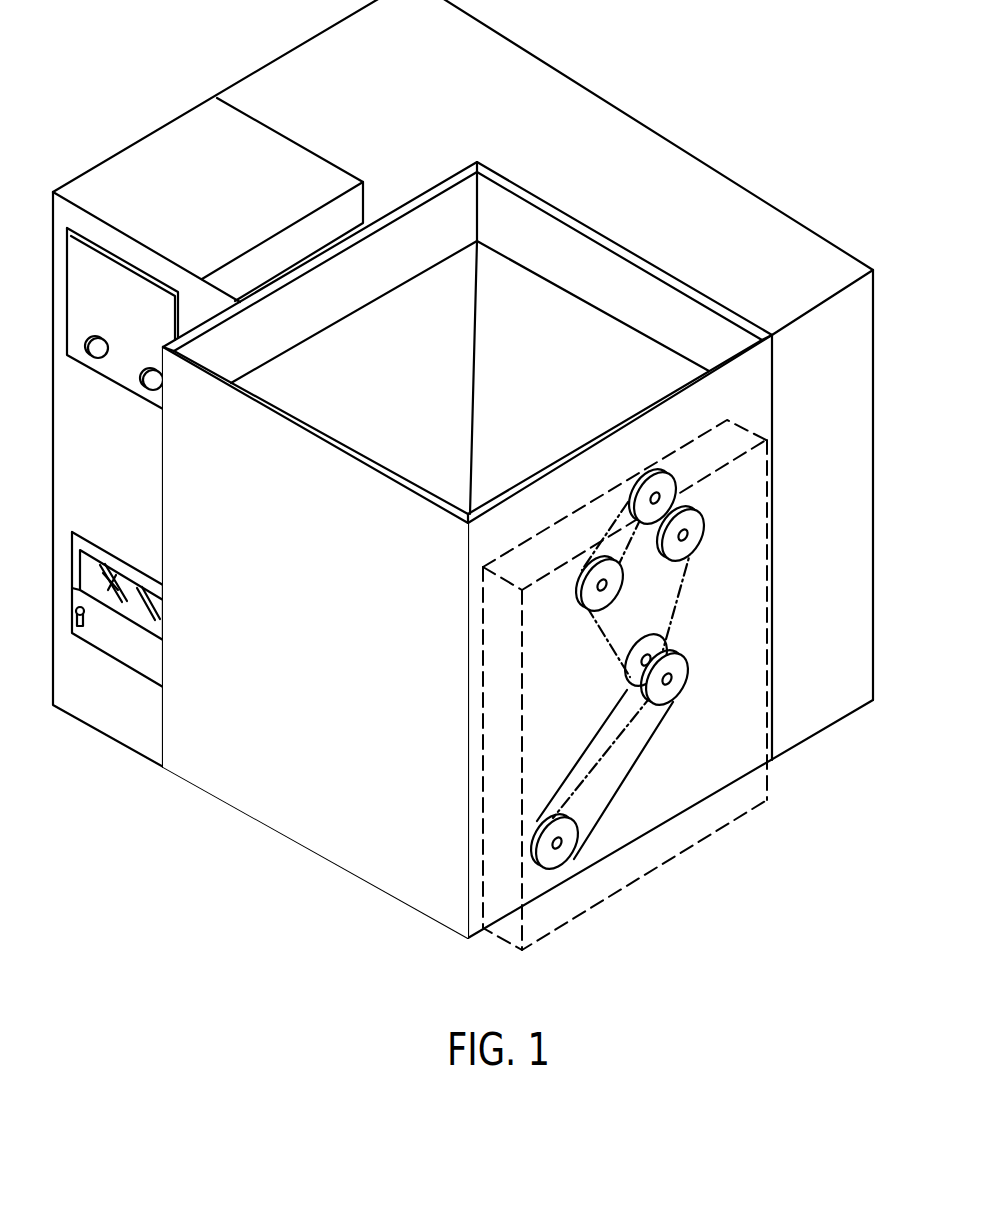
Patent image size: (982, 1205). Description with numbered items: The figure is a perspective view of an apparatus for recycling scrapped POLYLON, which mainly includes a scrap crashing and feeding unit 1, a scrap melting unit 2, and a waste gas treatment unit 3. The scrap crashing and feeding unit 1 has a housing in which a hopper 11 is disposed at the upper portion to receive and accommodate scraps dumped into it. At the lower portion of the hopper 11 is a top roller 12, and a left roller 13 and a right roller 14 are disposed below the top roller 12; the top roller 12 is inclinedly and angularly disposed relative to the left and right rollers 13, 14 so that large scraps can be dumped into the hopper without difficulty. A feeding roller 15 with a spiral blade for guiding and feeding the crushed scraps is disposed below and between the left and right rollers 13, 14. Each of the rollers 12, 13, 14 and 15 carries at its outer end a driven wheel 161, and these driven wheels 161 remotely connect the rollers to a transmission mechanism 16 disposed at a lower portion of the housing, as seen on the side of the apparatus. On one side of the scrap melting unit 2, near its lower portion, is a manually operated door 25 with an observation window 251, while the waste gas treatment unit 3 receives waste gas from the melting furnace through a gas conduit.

The scrap crashing and feeding unit 1 is at (362, 830).
The scrap melting unit 2 is at (163, 148).
The waste gas treatment unit 3 is at (637, 138).
The hopper 11 is at (583, 322).
The top roller 12 is at (656, 492).
The left roller 13 is at (590, 607).
The right roller 14 is at (698, 540).
The feeding roller 15 is at (645, 667).
The transmission mechanism 16 is at (565, 862).
The driven wheel 161 is at (707, 553).
The manually operated door 25 is at (123, 650).
The observation window 251 is at (110, 582).